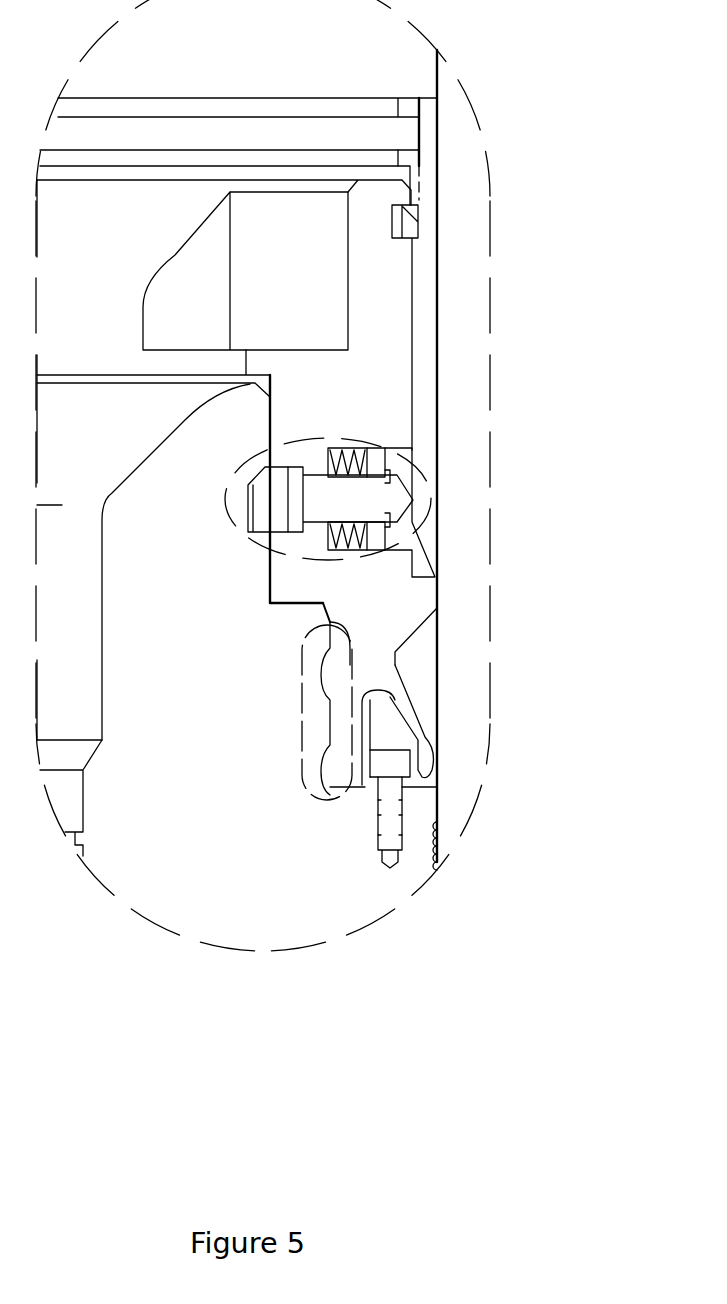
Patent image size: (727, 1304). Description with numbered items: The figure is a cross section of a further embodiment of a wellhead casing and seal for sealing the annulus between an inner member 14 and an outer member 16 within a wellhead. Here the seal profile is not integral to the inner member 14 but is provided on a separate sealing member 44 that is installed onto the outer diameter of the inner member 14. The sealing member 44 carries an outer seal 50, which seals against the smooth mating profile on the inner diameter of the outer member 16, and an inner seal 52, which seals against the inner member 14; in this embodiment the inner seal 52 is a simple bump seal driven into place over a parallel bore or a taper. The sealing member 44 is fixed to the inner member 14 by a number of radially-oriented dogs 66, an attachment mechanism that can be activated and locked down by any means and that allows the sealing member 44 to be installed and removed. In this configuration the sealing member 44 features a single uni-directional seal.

The inner member 14 is at (267, 907).
The outer member 16 is at (457, 172).
The sealing member 44 is at (372, 668).
The outer seal 50 is at (425, 740).
The inner seal 52 is at (303, 712).
The dogs 66 is at (372, 437).